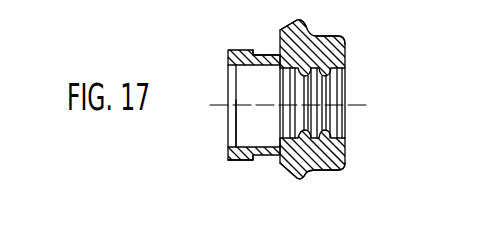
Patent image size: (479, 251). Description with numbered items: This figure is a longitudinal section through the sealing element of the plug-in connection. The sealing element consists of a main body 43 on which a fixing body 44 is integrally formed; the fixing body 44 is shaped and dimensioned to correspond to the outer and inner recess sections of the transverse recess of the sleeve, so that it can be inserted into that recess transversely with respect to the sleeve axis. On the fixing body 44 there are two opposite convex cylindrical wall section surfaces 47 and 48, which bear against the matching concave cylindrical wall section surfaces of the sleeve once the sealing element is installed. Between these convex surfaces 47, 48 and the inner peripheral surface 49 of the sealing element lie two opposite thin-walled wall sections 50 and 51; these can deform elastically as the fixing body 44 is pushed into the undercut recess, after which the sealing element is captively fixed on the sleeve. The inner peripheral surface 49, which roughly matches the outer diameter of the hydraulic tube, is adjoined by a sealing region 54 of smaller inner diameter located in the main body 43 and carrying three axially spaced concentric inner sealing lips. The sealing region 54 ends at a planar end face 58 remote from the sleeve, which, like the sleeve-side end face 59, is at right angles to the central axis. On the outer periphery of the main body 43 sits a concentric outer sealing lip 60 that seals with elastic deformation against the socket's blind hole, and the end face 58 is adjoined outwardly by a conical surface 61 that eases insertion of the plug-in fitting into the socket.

The main body 43 is at (350, 57).
The fixing body 44 is at (222, 51).
The convex cylindrical wall section surface 47 is at (268, 157).
The convex cylindrical wall section surface 48 is at (268, 53).
The inner peripheral surface 49 is at (267, 98).
The thin-walled wall section 50 is at (255, 148).
The thin-walled wall section 51 is at (255, 61).
The sealing region 54 is at (327, 75).
The end face 58 is at (347, 150).
The end face 59 is at (232, 158).
The outer sealing lip 60 is at (300, 22).
The conical surface 61 is at (337, 38).